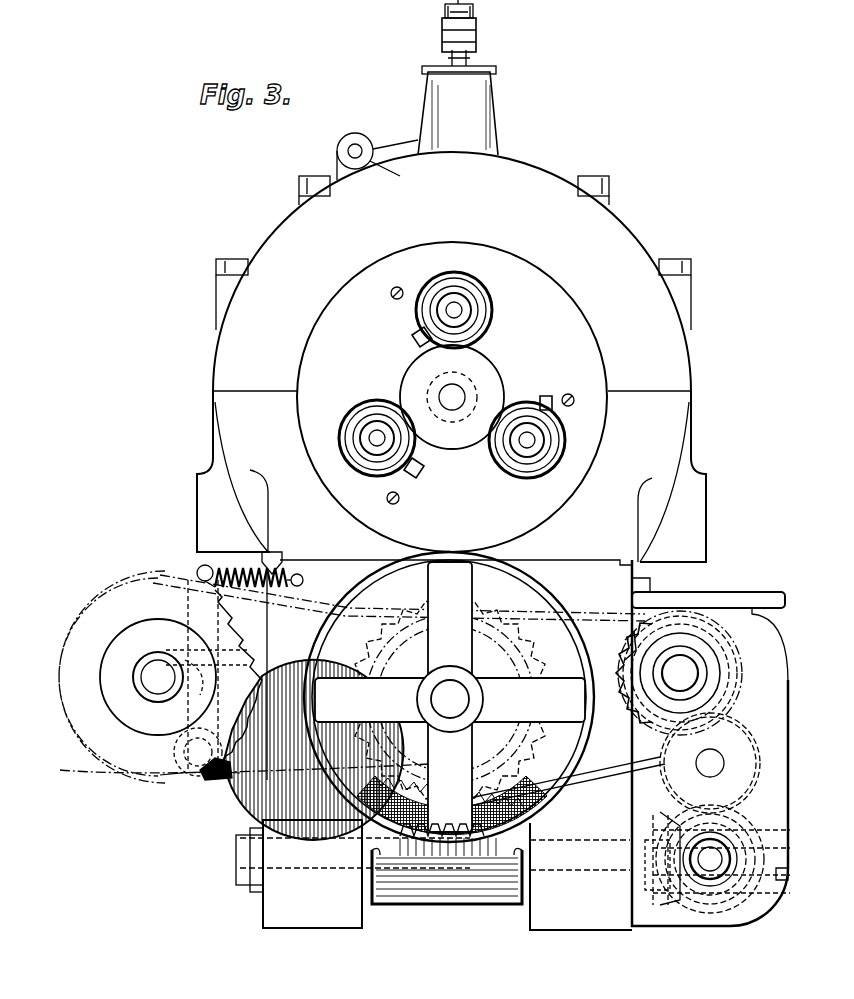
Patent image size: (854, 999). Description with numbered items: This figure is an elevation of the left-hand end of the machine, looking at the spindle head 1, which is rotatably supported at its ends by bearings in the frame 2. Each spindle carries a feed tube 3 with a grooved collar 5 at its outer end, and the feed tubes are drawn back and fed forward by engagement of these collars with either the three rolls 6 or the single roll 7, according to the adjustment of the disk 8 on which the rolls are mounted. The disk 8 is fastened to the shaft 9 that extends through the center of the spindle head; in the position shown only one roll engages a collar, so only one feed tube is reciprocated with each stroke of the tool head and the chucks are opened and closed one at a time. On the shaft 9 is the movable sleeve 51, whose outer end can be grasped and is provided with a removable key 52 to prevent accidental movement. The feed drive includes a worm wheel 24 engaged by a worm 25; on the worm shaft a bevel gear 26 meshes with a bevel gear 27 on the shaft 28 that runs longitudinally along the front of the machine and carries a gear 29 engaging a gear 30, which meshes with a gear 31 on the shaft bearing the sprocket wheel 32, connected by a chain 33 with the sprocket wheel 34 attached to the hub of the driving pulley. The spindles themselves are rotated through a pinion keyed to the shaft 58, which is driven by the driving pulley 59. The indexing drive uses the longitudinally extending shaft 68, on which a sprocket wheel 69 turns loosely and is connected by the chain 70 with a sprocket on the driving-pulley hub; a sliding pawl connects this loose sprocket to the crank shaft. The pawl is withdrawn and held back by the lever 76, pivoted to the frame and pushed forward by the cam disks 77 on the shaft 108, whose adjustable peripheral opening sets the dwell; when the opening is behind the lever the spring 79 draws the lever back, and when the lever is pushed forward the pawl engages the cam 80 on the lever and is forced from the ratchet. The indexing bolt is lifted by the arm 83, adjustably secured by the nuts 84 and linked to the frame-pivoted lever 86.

The spindle head 1 is at (452, 397).
The frame 2 is at (618, 336).
The feed tube 3 is at (480, 298).
The grooved collar 5 is at (478, 310).
The three rolls 6 is at (410, 341).
The single roll 7 is at (374, 402).
The disk 8 is at (400, 383).
The shaft 9 is at (458, 418).
The sleeve 51 is at (476, 392).
The removable key 52 is at (460, 390).
The worm wheel 24 is at (388, 900).
The worm 25 is at (468, 903).
The bevel gear 26 is at (660, 910).
The bevel gear 27 is at (684, 910).
The shaft 28 is at (720, 852).
The gear 29 is at (738, 905).
The gear 30 is at (742, 742).
The gear 31 is at (720, 680).
The sprocket wheel 32 is at (720, 662).
The chain 33 is at (610, 606).
The sprocket wheel 34 is at (522, 670).
The shaft 58 is at (449, 697).
The driving pulley 59 is at (566, 780).
The shaft 68 is at (138, 678).
The sprocket wheel 69 is at (105, 770).
The chain 70 is at (228, 778).
The lever 76 is at (206, 576).
The cam disks 77 is at (260, 800).
The spring 79 is at (280, 568).
The cam 80 is at (180, 702).
The arm 83 is at (438, 34).
The nuts 84 is at (476, 46).
The lever 86 is at (412, 158).
The shaft 108 is at (353, 874).